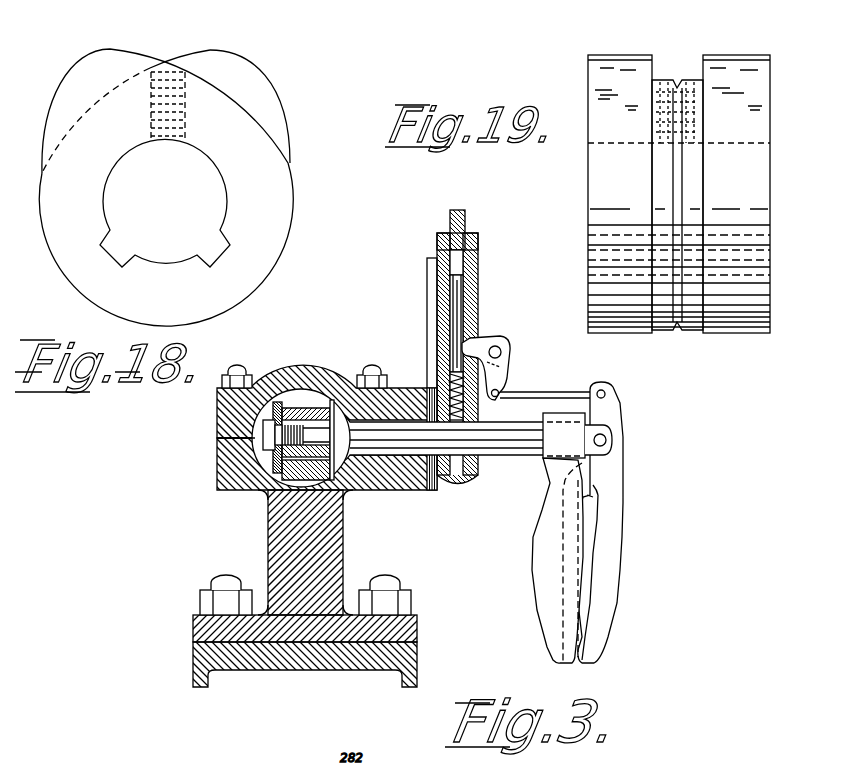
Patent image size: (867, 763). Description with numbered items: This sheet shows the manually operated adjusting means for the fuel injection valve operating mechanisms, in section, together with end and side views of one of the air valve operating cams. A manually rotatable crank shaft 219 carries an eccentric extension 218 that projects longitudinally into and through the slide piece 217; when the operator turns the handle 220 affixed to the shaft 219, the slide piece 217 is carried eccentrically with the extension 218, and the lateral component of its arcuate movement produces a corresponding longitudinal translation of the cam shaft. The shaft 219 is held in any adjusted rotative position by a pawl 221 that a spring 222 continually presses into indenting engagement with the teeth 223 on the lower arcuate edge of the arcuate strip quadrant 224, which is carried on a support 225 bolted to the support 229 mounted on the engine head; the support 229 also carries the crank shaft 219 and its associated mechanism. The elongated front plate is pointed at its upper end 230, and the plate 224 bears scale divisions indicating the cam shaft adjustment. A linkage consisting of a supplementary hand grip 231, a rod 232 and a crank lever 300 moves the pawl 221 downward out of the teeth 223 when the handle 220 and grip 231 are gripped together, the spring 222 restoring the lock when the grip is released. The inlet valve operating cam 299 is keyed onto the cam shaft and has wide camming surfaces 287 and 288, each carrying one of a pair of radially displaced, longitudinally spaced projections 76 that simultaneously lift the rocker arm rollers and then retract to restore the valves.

In FIG. 18, the cam projection 76 is at (100, 50).
In FIG. 19, the cam projection 76 is at (713, 55).
In FIG. 18, the camming surface 287 is at (50, 243).
In FIG. 19, the camming surface 287 is at (596, 166).
In FIG. 18, the camming surface 288 is at (72, 120).
In FIG. 19, the camming surface 288 is at (765, 178).
In FIG. 18, the inlet valve operating cam 299 is at (270, 221).
In FIG. 19, the inlet valve operating cam 299 is at (692, 325).
In FIG. 3, the slide piece 217 is at (262, 446).
In FIG. 3, the eccentric extension 218 is at (302, 420).
In FIG. 3, the crank shaft 219 is at (510, 456).
In FIG. 3, the handle 220 is at (541, 550).
In FIG. 3, the pawl 221 is at (462, 298).
In FIG. 3, the spring 222 is at (437, 383).
In FIG. 3, the teeth 223 is at (464, 253).
In FIG. 3, the arcuate strip quadrant 224 is at (466, 219).
In FIG. 3, the support 225 is at (437, 310).
In FIG. 3, the support 229 is at (271, 523).
In FIG. 3, the upper end 230 is at (468, 240).
In FIG. 3, the supplementary hand grip 231 is at (620, 596).
In FIG. 3, the rod 232 is at (542, 392).
In FIG. 3, the crank lever 300 is at (507, 347).